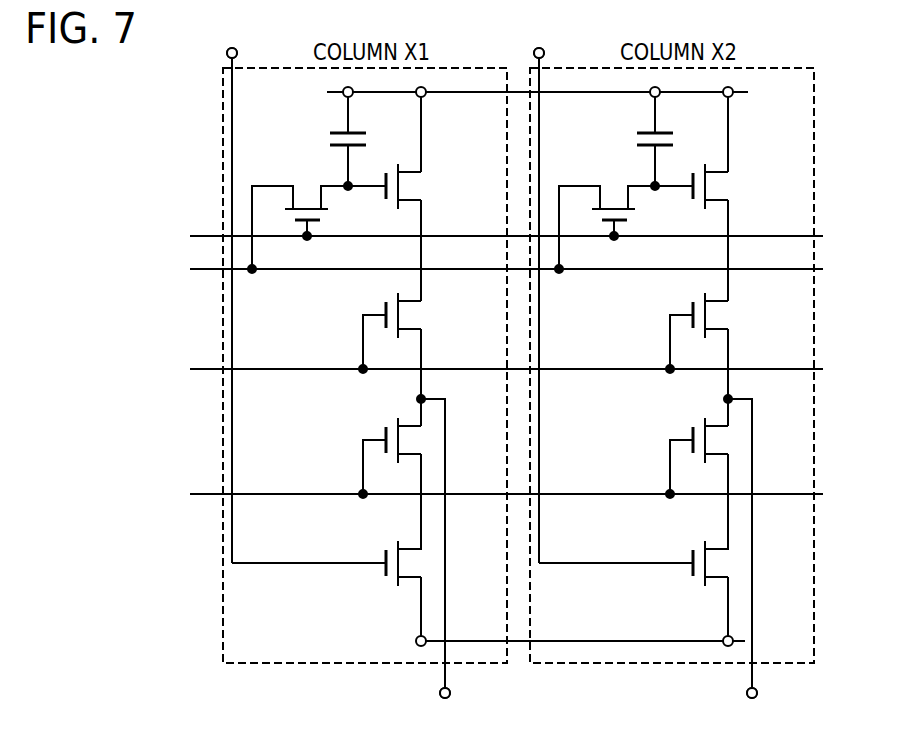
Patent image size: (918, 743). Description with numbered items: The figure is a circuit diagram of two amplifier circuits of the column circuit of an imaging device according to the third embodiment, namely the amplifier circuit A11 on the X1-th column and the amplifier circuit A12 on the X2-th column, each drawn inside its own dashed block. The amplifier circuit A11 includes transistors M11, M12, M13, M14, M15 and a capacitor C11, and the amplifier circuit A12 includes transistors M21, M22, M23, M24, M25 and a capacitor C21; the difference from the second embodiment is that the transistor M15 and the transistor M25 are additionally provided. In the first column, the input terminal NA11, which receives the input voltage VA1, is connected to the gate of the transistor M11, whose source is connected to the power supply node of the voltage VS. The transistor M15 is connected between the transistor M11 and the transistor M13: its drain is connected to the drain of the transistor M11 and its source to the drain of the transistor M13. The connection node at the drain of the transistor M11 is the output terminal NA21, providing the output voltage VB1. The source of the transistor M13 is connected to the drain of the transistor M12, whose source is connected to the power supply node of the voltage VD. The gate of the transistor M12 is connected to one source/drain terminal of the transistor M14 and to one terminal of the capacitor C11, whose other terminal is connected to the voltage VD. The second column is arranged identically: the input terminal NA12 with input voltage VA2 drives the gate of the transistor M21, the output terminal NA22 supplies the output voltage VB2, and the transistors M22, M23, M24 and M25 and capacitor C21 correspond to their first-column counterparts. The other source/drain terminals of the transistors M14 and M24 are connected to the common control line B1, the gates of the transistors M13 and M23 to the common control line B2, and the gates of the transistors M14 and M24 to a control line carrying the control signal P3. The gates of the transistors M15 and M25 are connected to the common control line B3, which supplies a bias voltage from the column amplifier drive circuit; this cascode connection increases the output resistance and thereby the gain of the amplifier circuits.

The amplifier circuit A11 is at (222, 122).
The amplifier circuit A12 is at (815, 118).
The voltage VD is at (556, 93).
The voltage VS is at (416, 641).
The control signal P3 is at (491, 237).
The common control line B1 is at (491, 270).
The common control line B2 is at (491, 370).
The common control line B3 is at (491, 495).
The input voltage VA1 is at (231, 291).
The input voltage VA2 is at (538, 291).
The input terminal NA11 is at (237, 52).
The input terminal NA12 is at (544, 52).
The output terminal NA21 is at (451, 693).
The output terminal NA22 is at (758, 693).
The output voltage VB1 is at (442, 565).
The output voltage VB2 is at (749, 565).
The capacitor C11 is at (339, 132).
The capacitor C21 is at (646, 132).
The transistor M11 is at (387, 572).
The transistor M12 is at (413, 187).
The transistor M13 is at (413, 315).
The transistor M14 is at (310, 194).
The transistor M15 is at (413, 440).
The transistor M21 is at (693, 572).
The transistor M22 is at (720, 187).
The transistor M23 is at (720, 315).
The transistor M24 is at (617, 194).
The transistor M25 is at (720, 440).